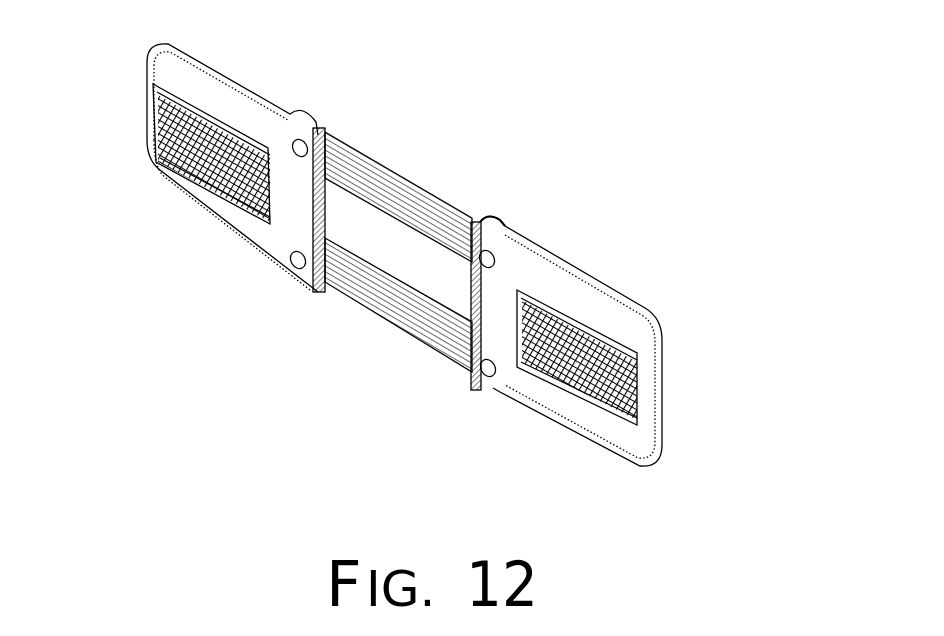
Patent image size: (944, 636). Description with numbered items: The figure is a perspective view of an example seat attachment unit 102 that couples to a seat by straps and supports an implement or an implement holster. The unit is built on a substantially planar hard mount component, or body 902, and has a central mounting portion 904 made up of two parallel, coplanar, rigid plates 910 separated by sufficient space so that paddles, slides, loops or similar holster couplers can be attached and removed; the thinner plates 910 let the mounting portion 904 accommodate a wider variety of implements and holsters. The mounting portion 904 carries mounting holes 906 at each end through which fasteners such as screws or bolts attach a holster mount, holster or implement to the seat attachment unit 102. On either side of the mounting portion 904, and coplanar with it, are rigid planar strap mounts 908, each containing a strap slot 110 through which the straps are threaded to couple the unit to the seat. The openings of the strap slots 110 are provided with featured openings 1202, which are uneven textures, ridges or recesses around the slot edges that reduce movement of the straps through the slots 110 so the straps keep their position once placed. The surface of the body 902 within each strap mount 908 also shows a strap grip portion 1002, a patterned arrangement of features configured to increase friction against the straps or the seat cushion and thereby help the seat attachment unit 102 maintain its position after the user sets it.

The seat attachment unit 102 is at (726, 117).
The strap slot 110 is at (183, 166).
The hard mount component 902 is at (510, 225).
The mounting portion 904 is at (478, 456).
The mounting hole 906 is at (306, 150).
The strap mount 908 is at (185, 52).
The plate 910 is at (437, 242).
The strap grip portion 1002 is at (280, 187).
The featured opening 1202 is at (183, 105).